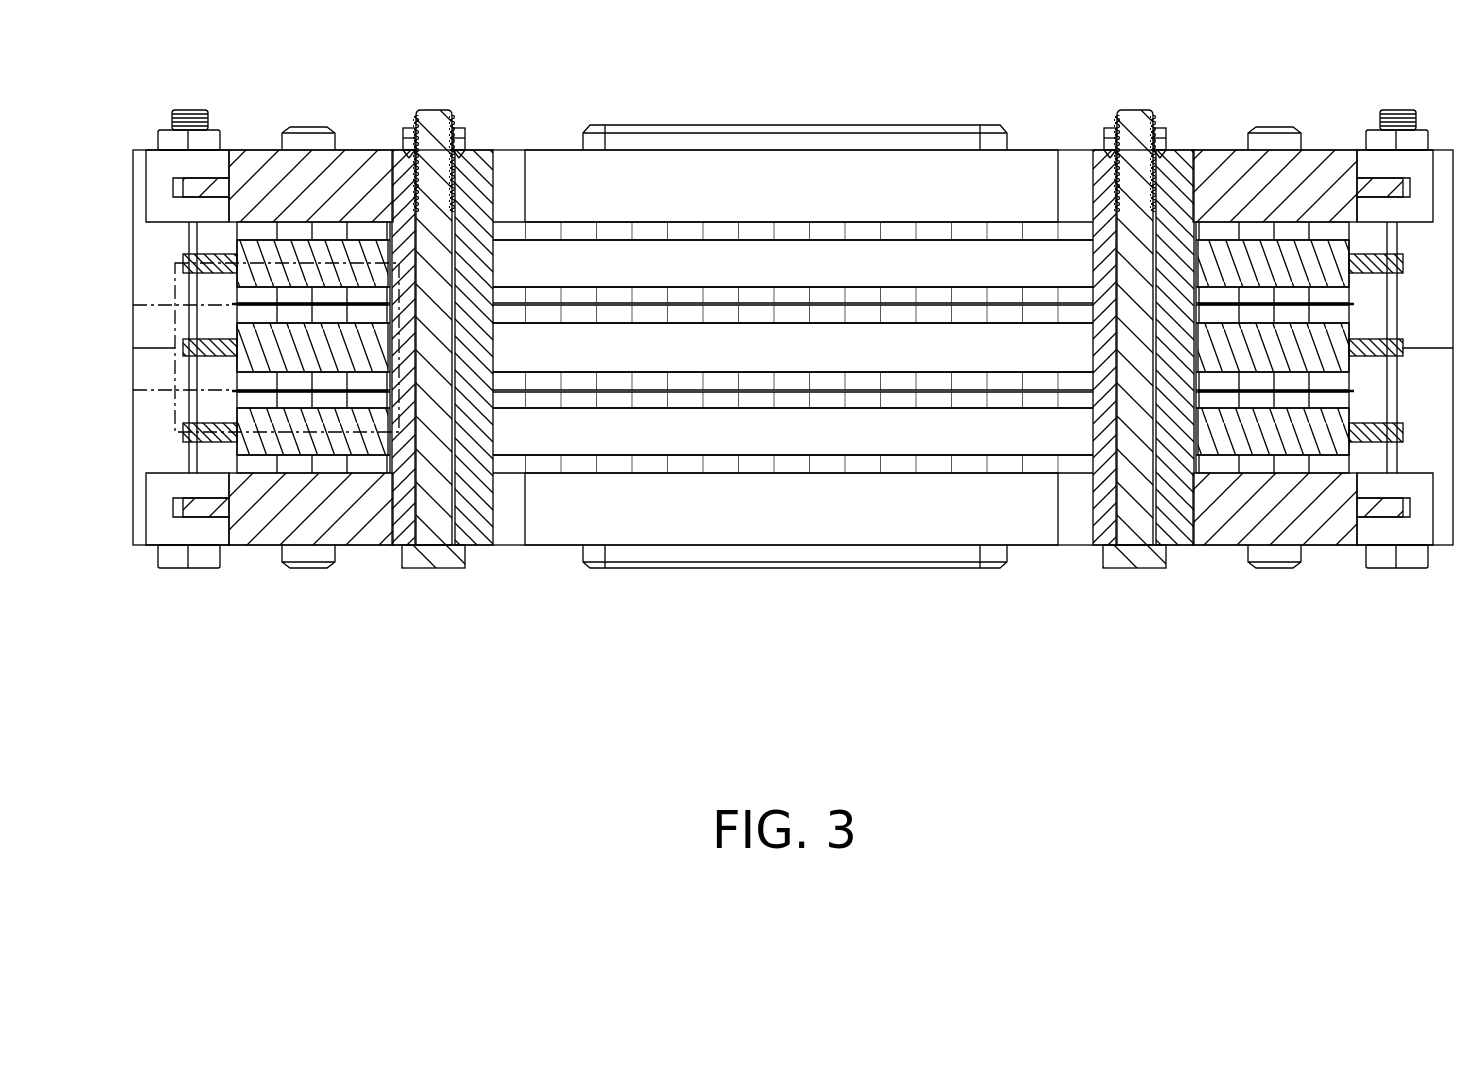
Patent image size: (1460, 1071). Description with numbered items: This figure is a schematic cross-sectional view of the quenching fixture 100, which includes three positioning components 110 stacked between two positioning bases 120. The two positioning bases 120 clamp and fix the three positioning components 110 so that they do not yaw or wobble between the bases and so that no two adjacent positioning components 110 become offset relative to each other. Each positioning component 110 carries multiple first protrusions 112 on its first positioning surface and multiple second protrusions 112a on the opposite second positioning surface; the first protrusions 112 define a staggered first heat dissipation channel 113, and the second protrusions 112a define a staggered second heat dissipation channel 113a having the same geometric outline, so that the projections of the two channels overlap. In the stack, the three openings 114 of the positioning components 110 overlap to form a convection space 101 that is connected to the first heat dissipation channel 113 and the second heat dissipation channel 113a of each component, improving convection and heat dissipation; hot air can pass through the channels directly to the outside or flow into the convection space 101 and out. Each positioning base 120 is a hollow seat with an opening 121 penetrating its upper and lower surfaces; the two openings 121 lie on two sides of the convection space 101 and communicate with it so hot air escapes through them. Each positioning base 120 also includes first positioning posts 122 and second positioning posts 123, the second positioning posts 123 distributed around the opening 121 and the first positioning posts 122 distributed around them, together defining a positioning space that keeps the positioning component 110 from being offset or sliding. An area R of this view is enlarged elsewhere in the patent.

The quenching fixture 100 is at (765, 387).
The convection space 101 is at (793, 464).
The positioning component 110 is at (1228, 255).
The first protrusion 112 is at (258, 230).
The second protrusion 112a is at (617, 297).
The first heat dissipation channel 113 is at (583, 220).
The second heat dissipation channel 113a is at (590, 284).
The opening 114 is at (827, 272).
The positioning base 120 is at (363, 182).
The opening 121 is at (1059, 184).
The first positioning post 122 is at (148, 250).
The second positioning post 123 is at (477, 197).
The area R is at (175, 310).